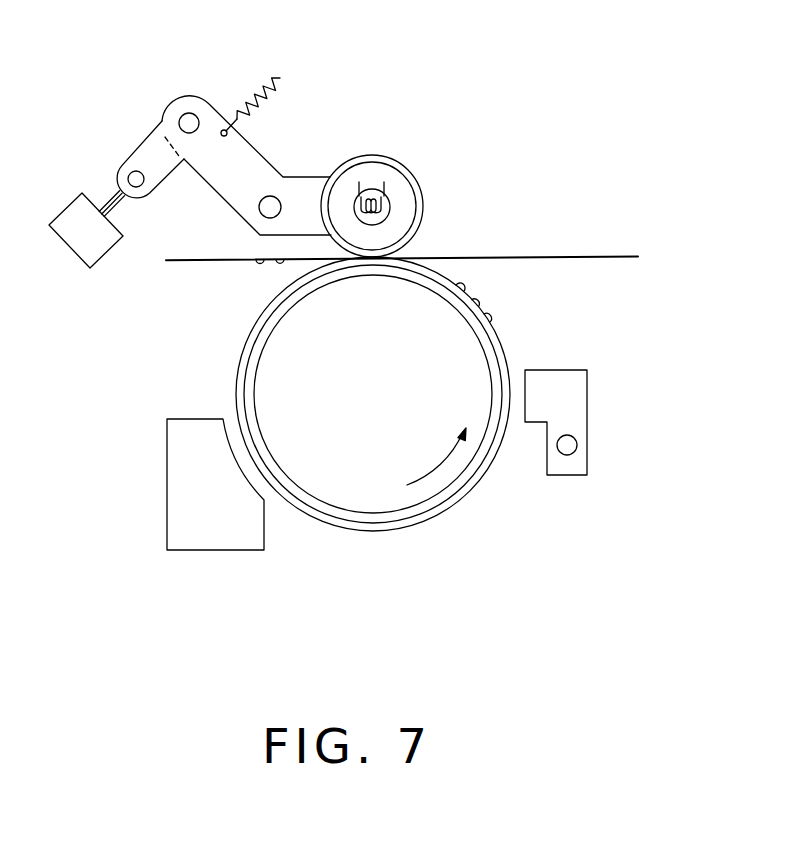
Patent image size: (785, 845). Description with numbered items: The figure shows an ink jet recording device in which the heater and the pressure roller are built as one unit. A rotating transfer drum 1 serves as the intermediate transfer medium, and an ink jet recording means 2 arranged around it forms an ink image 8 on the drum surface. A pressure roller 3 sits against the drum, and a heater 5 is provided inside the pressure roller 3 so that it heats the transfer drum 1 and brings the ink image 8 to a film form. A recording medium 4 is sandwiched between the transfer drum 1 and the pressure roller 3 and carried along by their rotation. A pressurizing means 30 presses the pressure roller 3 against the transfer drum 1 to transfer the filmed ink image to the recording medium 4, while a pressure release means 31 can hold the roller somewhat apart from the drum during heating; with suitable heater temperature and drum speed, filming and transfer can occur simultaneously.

The transfer drum 1 is at (377, 532).
The ink jet recording means 2 is at (588, 400).
The pressure roller 3 is at (410, 169).
The recording medium 4 is at (577, 256).
The heater 5 is at (389, 212).
The ink image 8 is at (477, 303).
The pressurizing means 30 is at (352, 136).
The pressure release means 31 is at (156, 110).